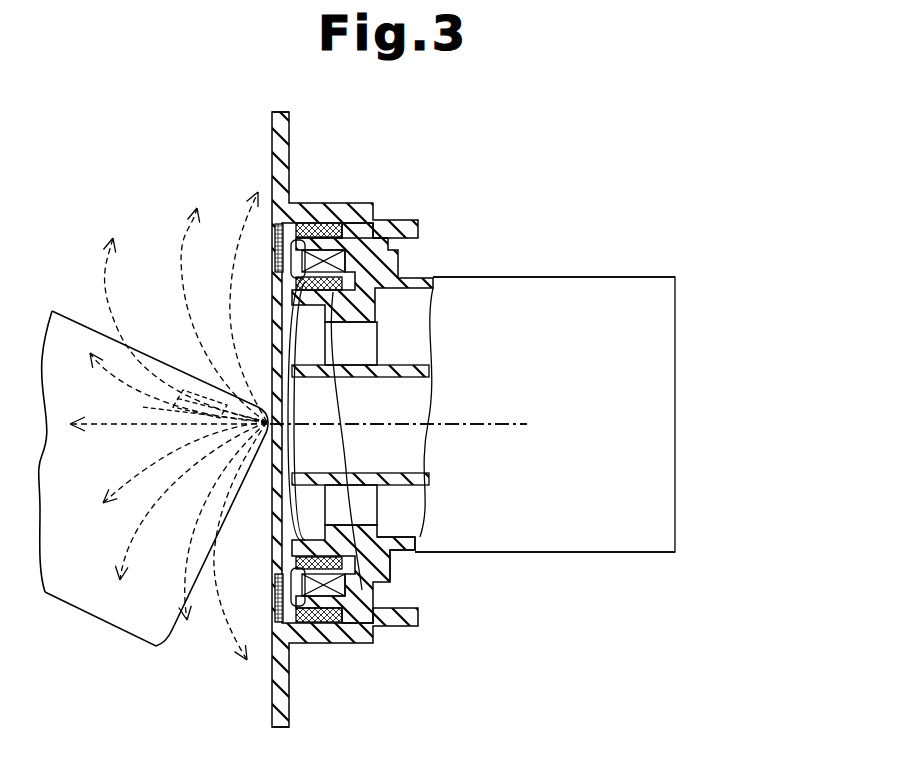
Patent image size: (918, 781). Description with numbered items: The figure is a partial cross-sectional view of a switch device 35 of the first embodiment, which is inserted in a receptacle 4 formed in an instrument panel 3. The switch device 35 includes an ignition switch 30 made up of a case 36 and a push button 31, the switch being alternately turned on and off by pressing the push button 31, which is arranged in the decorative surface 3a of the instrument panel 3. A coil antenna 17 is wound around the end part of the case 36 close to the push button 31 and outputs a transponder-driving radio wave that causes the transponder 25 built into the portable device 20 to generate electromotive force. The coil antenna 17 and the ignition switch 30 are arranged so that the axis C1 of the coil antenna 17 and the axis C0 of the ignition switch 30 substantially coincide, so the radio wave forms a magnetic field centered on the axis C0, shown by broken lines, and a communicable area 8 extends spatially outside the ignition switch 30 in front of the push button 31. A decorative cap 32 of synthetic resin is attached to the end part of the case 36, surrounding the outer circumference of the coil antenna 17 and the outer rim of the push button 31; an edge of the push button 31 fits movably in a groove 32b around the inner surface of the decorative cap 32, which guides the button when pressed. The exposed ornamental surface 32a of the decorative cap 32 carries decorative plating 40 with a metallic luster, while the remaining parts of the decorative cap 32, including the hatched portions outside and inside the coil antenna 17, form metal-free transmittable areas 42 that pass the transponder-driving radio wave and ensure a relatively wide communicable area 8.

The instrument panel 3 is at (312, 126).
The decorative surface 3a is at (272, 136).
The receptacle 4 is at (279, 236).
The communicable area 8 is at (178, 426).
The coil antenna 17 is at (343, 416).
The portable device 20 is at (155, 349).
The transponder 25 is at (142, 408).
The ignition switch 30 is at (576, 565).
The push button 31 is at (273, 520).
The decorative cap 32 is at (376, 296).
The ornamental surface 32a is at (278, 243).
The groove 32b is at (382, 553).
The switch device 35 is at (610, 215).
The case 36 is at (474, 554).
The decorative plating 40 is at (278, 253).
The transmittable areas 42 is at (338, 285).
The axis of the ignition switch C0 is at (477, 410).
The axis of the coil antenna C1 is at (497, 428).